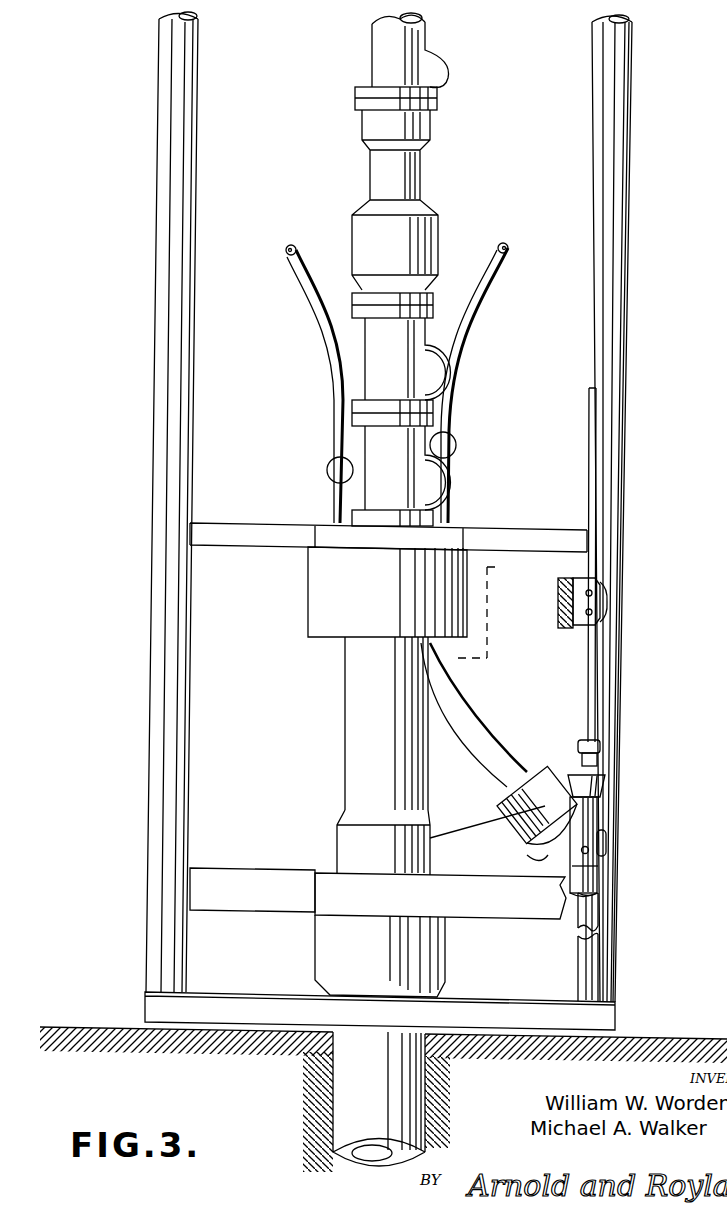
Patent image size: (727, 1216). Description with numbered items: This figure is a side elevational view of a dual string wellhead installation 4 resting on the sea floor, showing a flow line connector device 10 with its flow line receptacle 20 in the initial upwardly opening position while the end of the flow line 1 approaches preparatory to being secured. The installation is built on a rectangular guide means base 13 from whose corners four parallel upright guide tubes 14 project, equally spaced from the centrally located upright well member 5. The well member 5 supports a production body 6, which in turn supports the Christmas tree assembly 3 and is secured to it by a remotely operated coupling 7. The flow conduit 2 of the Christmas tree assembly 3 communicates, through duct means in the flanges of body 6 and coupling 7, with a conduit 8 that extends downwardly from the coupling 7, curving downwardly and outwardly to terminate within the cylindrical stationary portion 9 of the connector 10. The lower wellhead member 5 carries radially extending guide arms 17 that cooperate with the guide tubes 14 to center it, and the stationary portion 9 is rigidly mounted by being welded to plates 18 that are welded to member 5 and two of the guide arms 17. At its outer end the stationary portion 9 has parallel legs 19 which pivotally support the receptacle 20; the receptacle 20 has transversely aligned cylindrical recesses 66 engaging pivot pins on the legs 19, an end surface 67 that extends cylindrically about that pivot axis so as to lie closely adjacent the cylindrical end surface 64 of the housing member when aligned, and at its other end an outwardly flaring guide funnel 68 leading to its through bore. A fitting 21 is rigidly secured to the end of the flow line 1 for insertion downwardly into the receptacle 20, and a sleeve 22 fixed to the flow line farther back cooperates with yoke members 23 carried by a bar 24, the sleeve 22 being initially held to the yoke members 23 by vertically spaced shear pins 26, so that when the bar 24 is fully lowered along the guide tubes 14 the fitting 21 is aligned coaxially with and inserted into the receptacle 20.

The flow line 1 is at (600, 478).
The flow conduit 2 is at (459, 406).
The Christmas tree assembly 3 is at (356, 178).
The dual string wellhead installation 4 is at (327, 652).
The upright well member 5 is at (390, 861).
The production body 6 is at (392, 771).
The remotely operated coupling 7 is at (392, 594).
The conduit 8 is at (460, 690).
The stationary portion 9 is at (561, 777).
The flow line connector device 10 is at (606, 808).
The guide means base 13 is at (258, 991).
The guide tubes 14 is at (163, 381).
The guide arms 17 is at (232, 870).
The plates 18 is at (490, 861).
The legs 19 is at (604, 847).
The flow line receptacle 20 is at (604, 830).
The fitting 21 is at (600, 750).
The sleeve 22 is at (596, 628).
The yoke members 23 is at (606, 623).
The bar 24 is at (558, 609).
The shear pins 26 is at (593, 593).
The end surface 64 is at (538, 866).
The cylindrical recesses 66 is at (604, 866).
The end surface 67 is at (599, 905).
The guide funnel 68 is at (603, 782).